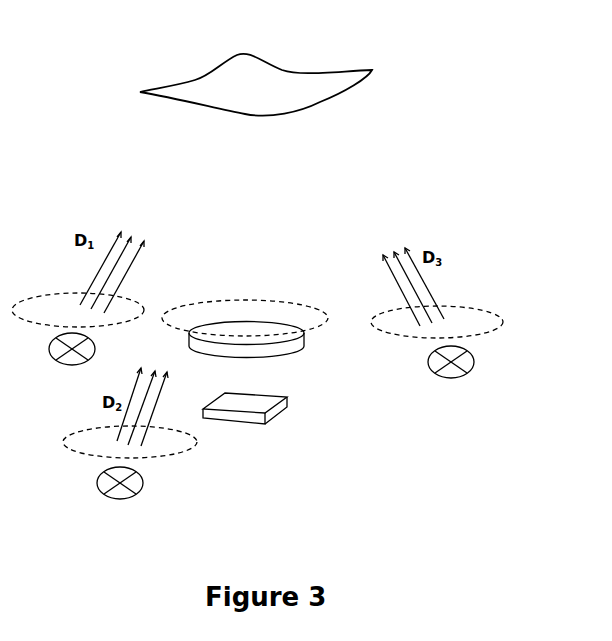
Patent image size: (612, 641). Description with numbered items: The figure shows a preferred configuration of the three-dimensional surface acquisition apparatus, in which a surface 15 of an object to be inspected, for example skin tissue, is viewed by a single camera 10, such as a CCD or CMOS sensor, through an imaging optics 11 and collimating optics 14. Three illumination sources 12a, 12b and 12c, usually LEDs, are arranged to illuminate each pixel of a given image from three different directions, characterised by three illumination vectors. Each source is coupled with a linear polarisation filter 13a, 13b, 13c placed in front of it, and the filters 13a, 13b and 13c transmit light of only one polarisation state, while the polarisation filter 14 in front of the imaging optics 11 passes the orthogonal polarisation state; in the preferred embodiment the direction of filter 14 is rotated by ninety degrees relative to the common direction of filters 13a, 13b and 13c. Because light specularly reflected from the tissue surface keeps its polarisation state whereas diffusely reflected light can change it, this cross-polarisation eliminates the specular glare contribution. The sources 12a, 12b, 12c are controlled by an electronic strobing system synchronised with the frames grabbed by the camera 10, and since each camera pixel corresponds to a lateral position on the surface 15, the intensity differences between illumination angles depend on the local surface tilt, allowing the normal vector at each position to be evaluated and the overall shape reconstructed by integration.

The camera 10 is at (267, 409).
The imaging optics 11 is at (265, 346).
The collimating optics 14 is at (252, 311).
The surface of an object to be inspected 15 is at (256, 104).
The illumination source 12a is at (96, 349).
The illumination source 12b is at (145, 488).
The illumination source 12c is at (472, 369).
The linear polarisation filter 13a is at (92, 301).
The linear polarisation filter 13b is at (151, 446).
The linear polarisation filter 13c is at (454, 312).